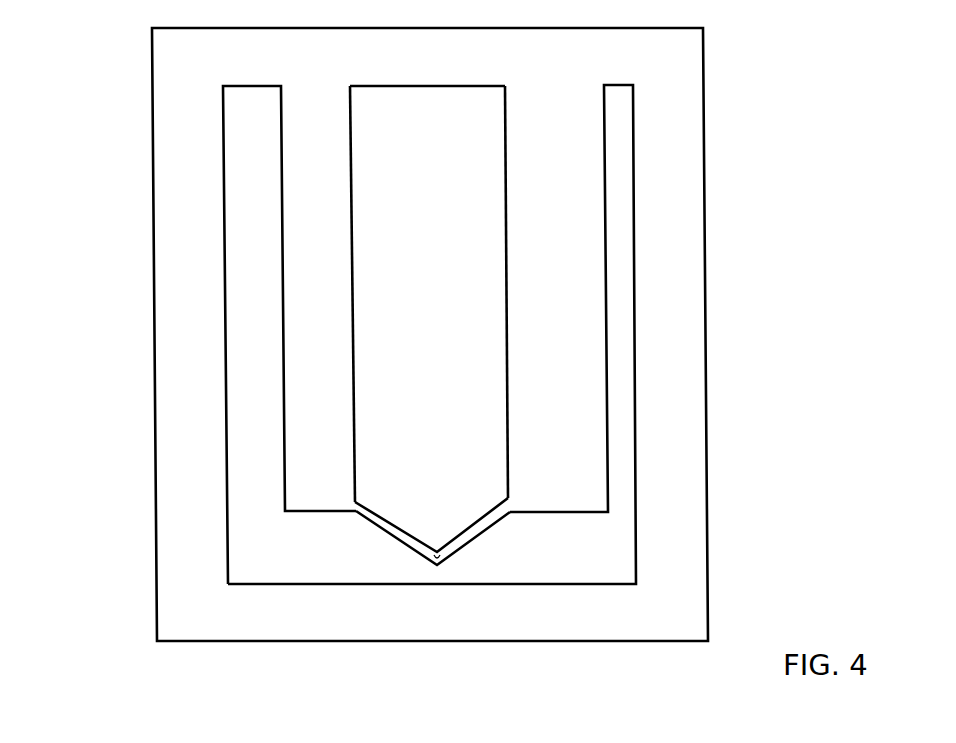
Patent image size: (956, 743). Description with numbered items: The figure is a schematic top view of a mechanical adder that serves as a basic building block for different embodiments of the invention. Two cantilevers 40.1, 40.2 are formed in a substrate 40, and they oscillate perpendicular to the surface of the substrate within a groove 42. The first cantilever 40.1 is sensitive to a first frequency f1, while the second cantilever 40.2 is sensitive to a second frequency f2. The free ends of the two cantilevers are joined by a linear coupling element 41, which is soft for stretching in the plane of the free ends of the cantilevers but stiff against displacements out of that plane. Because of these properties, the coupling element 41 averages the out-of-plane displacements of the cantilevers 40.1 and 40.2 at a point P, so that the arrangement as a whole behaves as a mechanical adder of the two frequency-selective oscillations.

The substrate 40 is at (688, 68).
The groove 42 is at (253, 215).
The first cantilever 40.1 is at (312, 377).
The second cantilever 40.2 is at (568, 396).
The linear coupling element 41 is at (392, 530).
The point P is at (437, 568).
The first frequency f1 is at (314, 248).
The second frequency f2 is at (552, 248).